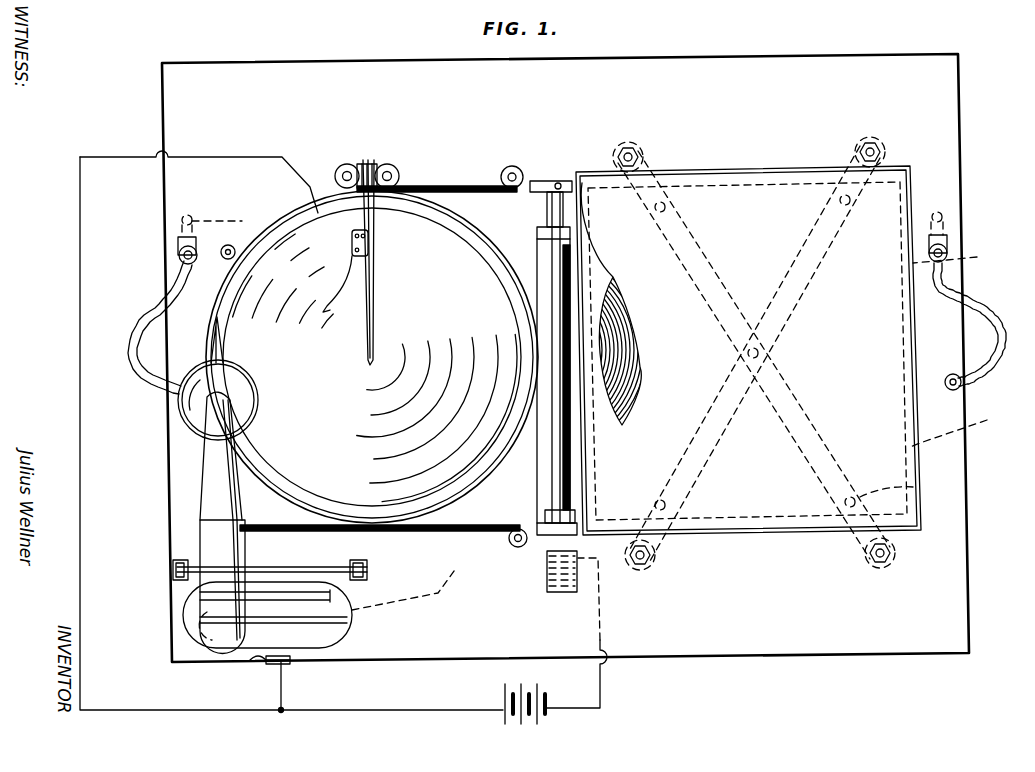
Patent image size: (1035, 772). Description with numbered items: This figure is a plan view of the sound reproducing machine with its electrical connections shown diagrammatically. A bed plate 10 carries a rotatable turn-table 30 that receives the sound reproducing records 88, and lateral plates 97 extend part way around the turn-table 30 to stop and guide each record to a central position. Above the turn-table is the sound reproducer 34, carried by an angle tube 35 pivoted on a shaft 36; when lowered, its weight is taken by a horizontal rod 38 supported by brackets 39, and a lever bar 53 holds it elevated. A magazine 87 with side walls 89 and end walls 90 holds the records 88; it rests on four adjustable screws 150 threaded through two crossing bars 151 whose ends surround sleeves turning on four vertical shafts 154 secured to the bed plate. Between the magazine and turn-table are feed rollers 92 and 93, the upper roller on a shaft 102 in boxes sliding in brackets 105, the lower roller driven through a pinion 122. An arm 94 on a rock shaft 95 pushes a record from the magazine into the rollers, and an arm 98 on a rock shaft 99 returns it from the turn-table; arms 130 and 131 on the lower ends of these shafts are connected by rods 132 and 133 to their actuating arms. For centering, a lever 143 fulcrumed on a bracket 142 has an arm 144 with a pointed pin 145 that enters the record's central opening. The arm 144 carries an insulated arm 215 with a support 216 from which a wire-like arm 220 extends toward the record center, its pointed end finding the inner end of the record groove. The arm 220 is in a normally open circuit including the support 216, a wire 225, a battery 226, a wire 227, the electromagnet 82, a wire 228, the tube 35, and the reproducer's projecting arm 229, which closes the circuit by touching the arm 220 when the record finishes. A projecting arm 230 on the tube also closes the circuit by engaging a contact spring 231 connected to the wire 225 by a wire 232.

The bed plate 10 is at (162, 97).
The wire 225 is at (80, 264).
The battery 226 is at (503, 696).
The wire 227 is at (600, 690).
The electromagnet 82 is at (546, 578).
The wire 228 is at (411, 577).
The wire 232 is at (285, 690).
The contact spring 231 is at (252, 664).
The turn-table 30 is at (423, 217).
The lateral plates 97 is at (410, 186).
The bracket 142 is at (348, 164).
The lever 143 is at (385, 164).
The arm 144 is at (376, 282).
The support 216 is at (352, 239).
The arm 215 is at (379, 231).
The wire-like arm 220 is at (350, 270).
The pointed pin 145 is at (368, 365).
The brackets 105 is at (538, 181).
The pinion 122 is at (537, 233).
The feed roller 92 is at (541, 268).
The feed roller 93 is at (552, 290).
The shaft 102 is at (562, 502).
The magazine 87 is at (762, 203).
The bars 151 is at (800, 306).
The side walls 89 is at (695, 173).
The vertical shafts 154 is at (640, 157).
The sound reproducing records 88 is at (632, 325).
The arm 94 is at (966, 383).
The shaft 95 is at (947, 250).
The rod 132 is at (933, 207).
The arm 130 is at (950, 200).
The end walls 90 is at (961, 342).
The screws 150 is at (913, 492).
The shaft 99 is at (178, 256).
The arm 131 is at (180, 226).
The rod 133 is at (228, 216).
The arm 98 is at (134, 312).
The sound reproducer 34 is at (260, 412).
The projecting arm 229 is at (225, 340).
The angle tube 35 is at (208, 578).
The shaft 36 is at (335, 643).
The lever bar 53 is at (282, 589).
The projecting arm 230 is at (250, 639).
The horizontal rod 38 is at (332, 566).
The brackets 39 is at (178, 560).